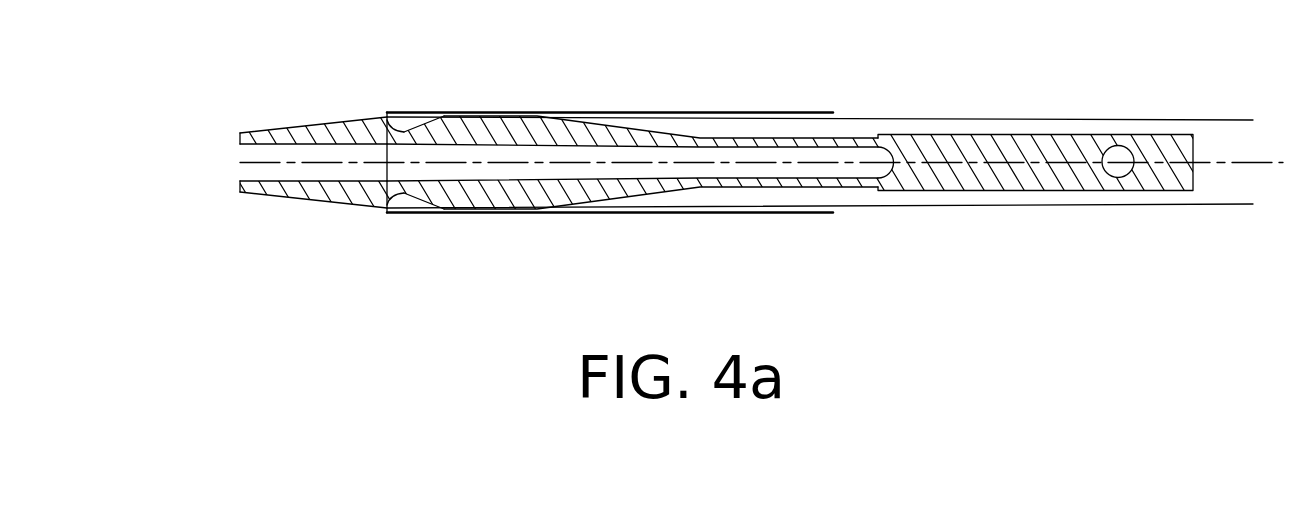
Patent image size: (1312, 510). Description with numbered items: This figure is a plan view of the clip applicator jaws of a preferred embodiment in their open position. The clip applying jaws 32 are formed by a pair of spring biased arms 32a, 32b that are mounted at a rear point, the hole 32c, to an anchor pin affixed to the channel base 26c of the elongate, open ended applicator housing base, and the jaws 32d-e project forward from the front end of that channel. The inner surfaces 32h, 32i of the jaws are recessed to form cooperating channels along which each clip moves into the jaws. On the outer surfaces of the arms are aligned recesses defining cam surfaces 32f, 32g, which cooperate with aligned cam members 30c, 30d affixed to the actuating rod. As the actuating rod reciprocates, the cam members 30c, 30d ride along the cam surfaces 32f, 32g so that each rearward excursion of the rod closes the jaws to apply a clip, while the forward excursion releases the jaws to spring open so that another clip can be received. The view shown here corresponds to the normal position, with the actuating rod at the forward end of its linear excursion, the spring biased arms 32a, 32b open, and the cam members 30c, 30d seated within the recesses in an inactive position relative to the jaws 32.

The clip applying jaws 32 is at (972, 143).
The spring biased arm 32a is at (687, 138).
The spring biased arm 32b is at (703, 190).
The hole 32c is at (1128, 154).
The jaws 32d-e is at (242, 197).
The cam surface 32f is at (447, 118).
The cam surface 32g is at (444, 212).
The inner surface 32h is at (300, 148).
The inner surface 32i is at (300, 188).
The cam member 30c is at (412, 120).
The cam member 30d is at (412, 208).
The channel base 26c is at (1237, 128).